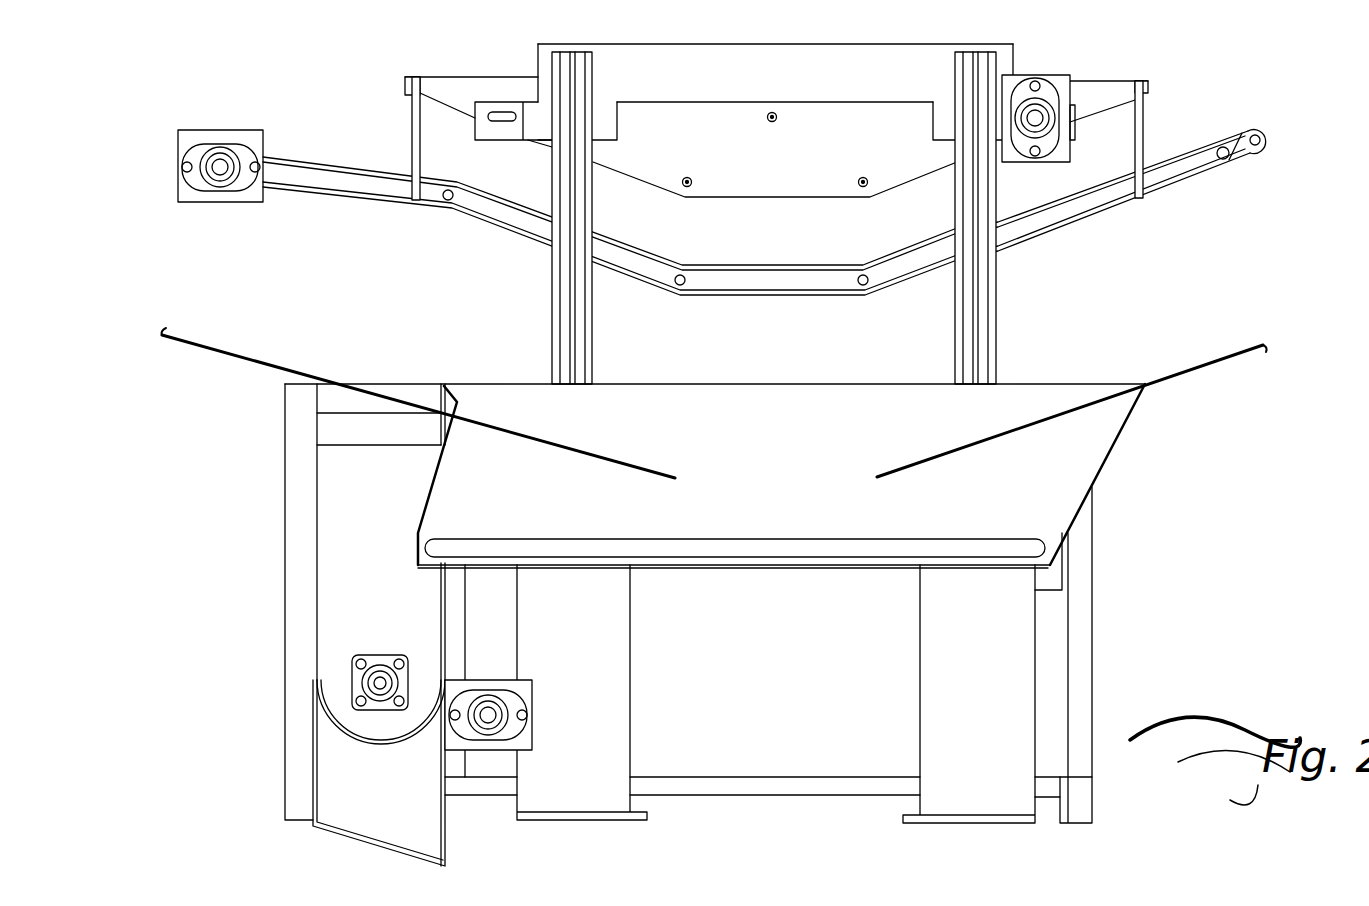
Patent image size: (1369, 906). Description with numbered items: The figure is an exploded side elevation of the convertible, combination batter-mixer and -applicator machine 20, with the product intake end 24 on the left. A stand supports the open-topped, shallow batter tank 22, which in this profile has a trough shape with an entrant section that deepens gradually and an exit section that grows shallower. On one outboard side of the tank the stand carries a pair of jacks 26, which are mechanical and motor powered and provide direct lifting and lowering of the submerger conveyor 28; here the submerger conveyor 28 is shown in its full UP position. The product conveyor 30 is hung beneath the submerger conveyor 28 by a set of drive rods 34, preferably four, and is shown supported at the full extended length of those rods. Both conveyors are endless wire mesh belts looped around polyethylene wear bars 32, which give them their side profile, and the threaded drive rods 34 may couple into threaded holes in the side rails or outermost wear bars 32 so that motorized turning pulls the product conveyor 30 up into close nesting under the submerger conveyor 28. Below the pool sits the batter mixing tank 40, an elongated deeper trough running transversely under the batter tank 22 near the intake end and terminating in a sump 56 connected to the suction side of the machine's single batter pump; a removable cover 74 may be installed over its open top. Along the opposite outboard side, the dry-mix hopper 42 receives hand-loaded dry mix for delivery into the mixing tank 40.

The convertible, combination batter-mixer and -applicator machine 20 is at (297, 277).
The batter tank 22 is at (795, 422).
The product intake end 24 is at (305, 164).
The jacks 26 is at (568, 300).
The submerger conveyor 28 is at (668, 52).
The product conveyor 30 is at (788, 293).
The wear bars 32 is at (810, 277).
The drive rods 34 is at (413, 122).
The batter mixing tank 40 is at (335, 532).
The dry-mix hopper 42 is at (767, 518).
The sump 56 is at (418, 818).
The removable cover 74 is at (225, 348).